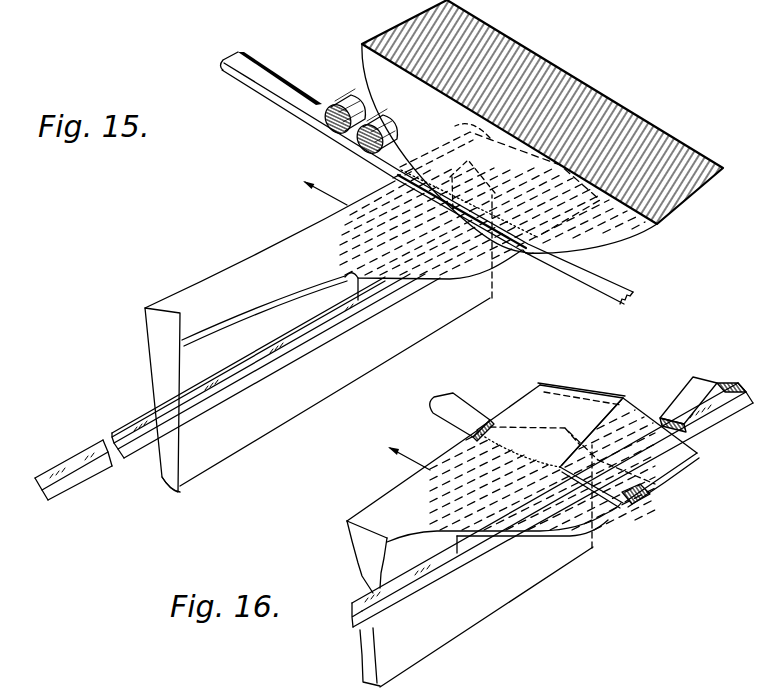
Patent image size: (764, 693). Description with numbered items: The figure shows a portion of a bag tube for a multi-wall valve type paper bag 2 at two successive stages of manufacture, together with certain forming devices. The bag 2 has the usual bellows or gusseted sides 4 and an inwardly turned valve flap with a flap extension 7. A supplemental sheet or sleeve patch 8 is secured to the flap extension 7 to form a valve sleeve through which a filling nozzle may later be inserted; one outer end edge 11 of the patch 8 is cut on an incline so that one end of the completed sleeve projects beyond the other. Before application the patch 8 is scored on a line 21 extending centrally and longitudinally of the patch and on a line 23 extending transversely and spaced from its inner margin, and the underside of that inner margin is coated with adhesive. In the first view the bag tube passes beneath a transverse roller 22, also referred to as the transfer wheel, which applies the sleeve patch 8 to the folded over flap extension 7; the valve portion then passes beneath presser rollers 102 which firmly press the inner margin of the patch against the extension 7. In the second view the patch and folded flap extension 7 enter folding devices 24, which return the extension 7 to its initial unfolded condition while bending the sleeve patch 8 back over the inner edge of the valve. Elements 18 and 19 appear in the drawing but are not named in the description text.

In FIG. 15, the bag 2 is at (142, 312).
In FIG. 16, the bag 2 is at (340, 531).
In FIG. 15, the gusseted sides 4 is at (160, 488).
In FIG. 15, the flap extension 7 is at (461, 174).
In FIG. 16, the flap extension 7 is at (632, 503).
In FIG. 15, the sleeve patch 8 is at (575, 212).
In FIG. 16, the sleeve patch 8 is at (615, 398).
In FIG. 15, the outer end edge 11 is at (490, 138).
In FIG. 16, the outer end edge 11 is at (548, 383).
In FIG. 15, the guide rail 18 is at (42, 497).
In FIG. 16, the guide rail 18 is at (716, 426).
In FIG. 15, the web sheet 19 is at (367, 262).
In FIG. 16, the web sheet 19 is at (693, 378).
In FIG. 16, the scoring line 21 is at (585, 420).
In FIG. 15, the transverse roller 22 is at (505, 40).
In FIG. 16, the transverse scoring line 23 is at (495, 440).
In FIG. 16, the folding devices 24 is at (468, 410).
In FIG. 15, the presser rollers 102 is at (353, 98).